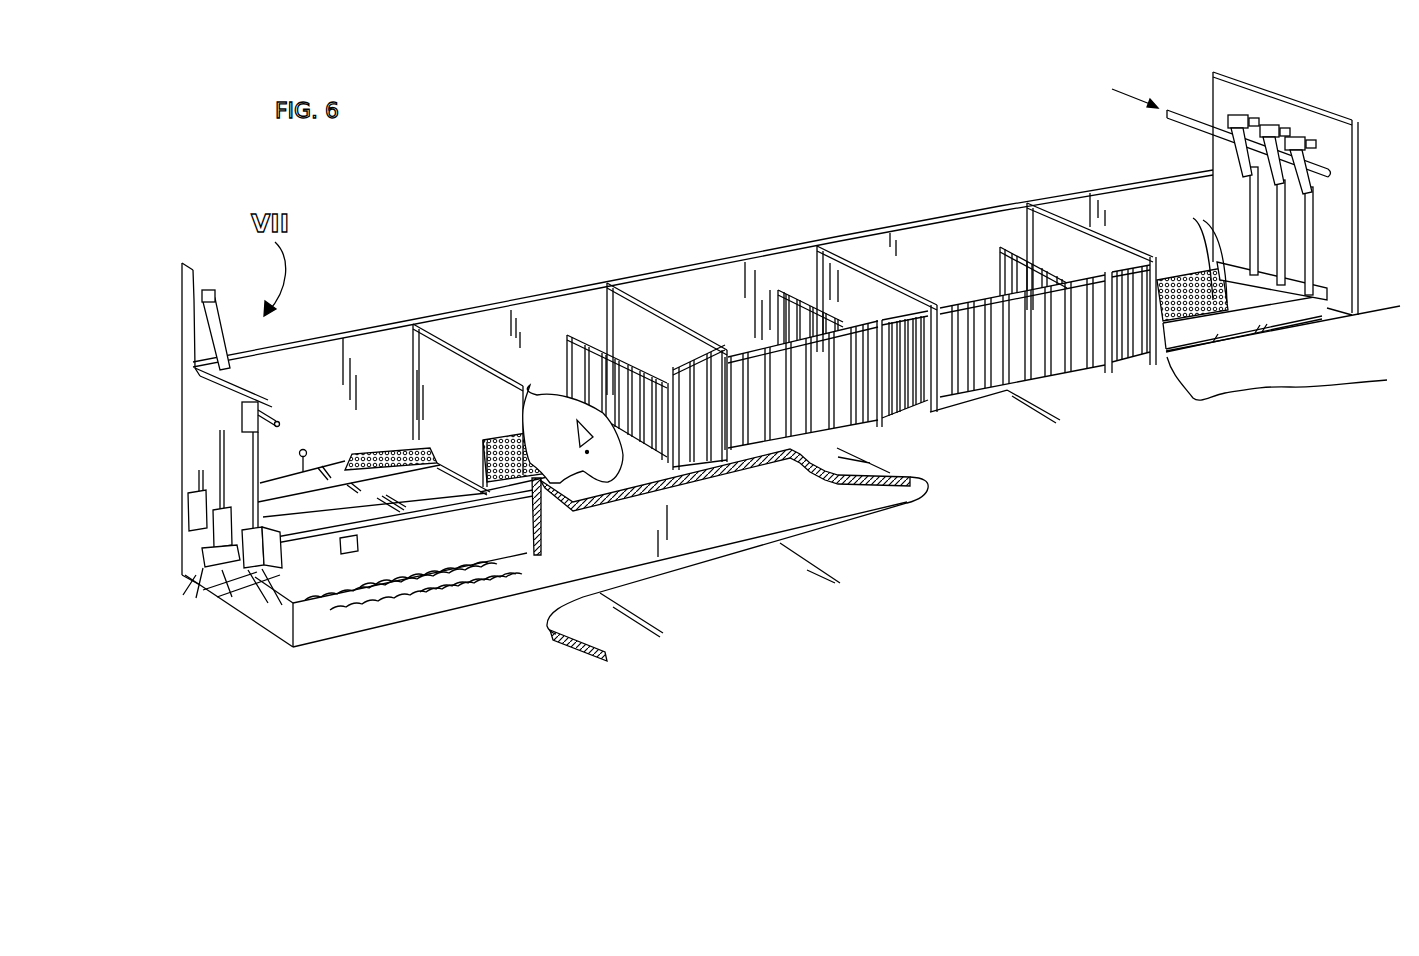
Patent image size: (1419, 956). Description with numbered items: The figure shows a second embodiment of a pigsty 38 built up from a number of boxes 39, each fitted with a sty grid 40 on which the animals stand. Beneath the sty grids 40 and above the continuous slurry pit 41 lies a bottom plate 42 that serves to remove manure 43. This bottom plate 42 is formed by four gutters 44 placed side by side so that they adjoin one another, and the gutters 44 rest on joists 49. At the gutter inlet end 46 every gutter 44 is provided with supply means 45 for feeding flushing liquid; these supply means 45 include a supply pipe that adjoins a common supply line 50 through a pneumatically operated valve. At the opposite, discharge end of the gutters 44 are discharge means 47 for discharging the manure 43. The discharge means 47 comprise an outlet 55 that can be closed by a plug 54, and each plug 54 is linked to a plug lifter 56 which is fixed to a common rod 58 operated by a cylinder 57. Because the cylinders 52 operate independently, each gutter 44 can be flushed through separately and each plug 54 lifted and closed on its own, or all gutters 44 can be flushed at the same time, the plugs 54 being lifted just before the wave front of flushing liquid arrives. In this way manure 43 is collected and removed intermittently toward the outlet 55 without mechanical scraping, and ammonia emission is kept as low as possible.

The pigsty 38 is at (699, 162).
The boxes 39 is at (865, 246).
The sty grid 40 is at (483, 448).
The continuous slurry pit 41 is at (284, 619).
The bottom plate 42 is at (222, 598).
The manure 43 is at (377, 600).
The gutters 44 is at (1191, 260).
The supply means 45 is at (1244, 200).
The gutter inlet end 46 is at (1313, 316).
The discharge means 47 is at (213, 468).
The joists 49 is at (520, 508).
The supply line 50 is at (1175, 108).
The cylinders 52 is at (1232, 147).
The plug 54 is at (262, 592).
The outlet 55 is at (228, 575).
The plug lifter 56 is at (258, 481).
The cylinder 57 is at (215, 326).
The common rod 58 is at (283, 421).